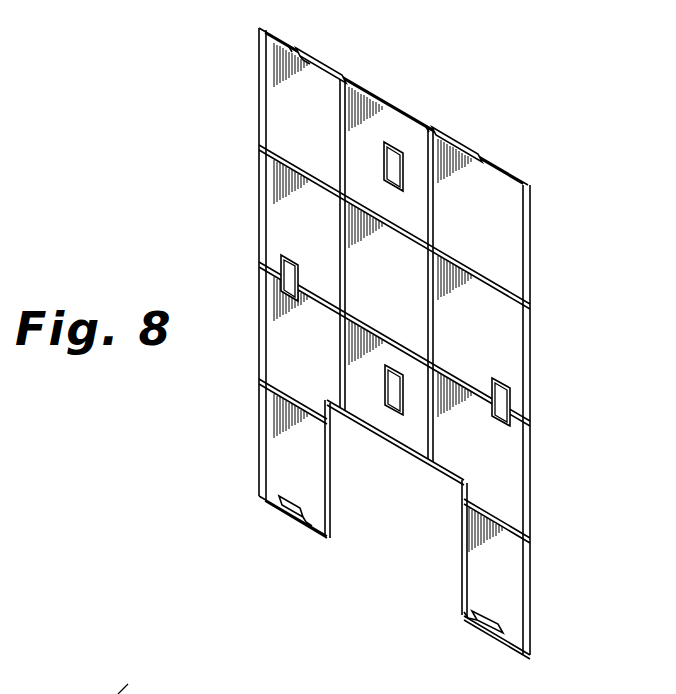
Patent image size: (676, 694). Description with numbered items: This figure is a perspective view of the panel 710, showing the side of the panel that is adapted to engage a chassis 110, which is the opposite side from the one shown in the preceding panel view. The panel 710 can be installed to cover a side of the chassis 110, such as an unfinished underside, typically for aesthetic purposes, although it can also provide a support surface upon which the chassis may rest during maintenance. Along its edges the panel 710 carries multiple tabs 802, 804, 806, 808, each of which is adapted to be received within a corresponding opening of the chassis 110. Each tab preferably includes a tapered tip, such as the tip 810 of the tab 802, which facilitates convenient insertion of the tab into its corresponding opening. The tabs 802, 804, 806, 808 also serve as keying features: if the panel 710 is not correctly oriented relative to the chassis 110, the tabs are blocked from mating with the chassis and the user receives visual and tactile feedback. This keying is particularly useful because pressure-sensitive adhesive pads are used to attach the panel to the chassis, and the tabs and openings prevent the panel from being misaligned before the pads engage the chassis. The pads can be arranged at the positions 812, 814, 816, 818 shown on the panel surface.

The panel 710 is at (473, 90).
The tab 802 is at (327, 63).
The tab 804 is at (463, 144).
The tab 806 is at (283, 507).
The tab 808 is at (495, 622).
The tapered tip 810 is at (312, 72).
The PSA pad position 812 is at (391, 163).
The PSA pad position 814 is at (497, 395).
The PSA pad position 816 is at (386, 406).
The PSA pad position 818 is at (287, 270).
The chassis 110 is at (128, 684).